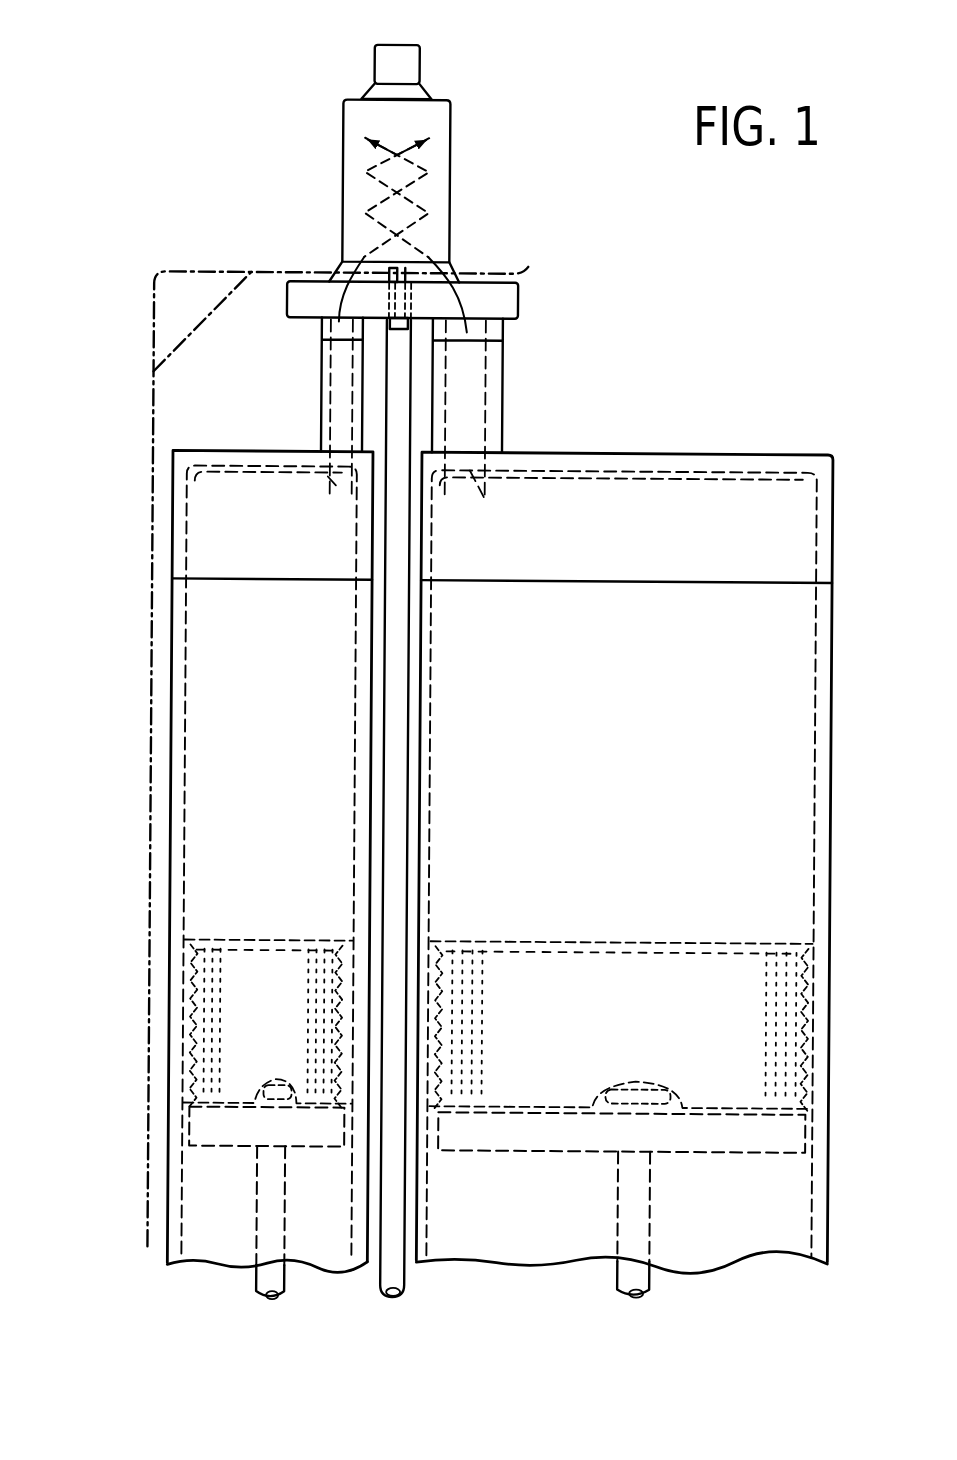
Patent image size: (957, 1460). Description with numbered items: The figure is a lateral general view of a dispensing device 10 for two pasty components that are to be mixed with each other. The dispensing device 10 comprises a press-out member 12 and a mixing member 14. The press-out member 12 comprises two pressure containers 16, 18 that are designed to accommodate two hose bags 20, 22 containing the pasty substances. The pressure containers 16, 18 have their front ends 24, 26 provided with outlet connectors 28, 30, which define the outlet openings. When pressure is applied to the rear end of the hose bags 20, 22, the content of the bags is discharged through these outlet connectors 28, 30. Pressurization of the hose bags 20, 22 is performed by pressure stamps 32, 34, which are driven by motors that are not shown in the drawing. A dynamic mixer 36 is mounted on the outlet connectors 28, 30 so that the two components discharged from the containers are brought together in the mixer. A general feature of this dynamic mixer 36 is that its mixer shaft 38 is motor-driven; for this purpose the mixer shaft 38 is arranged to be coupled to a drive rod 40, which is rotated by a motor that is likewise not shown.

The dispensing device 10 is at (82, 335).
The press-out member 12 is at (128, 985).
The mixing member 14 is at (522, 80).
The pressure container 16 is at (828, 766).
The pressure container 18 is at (178, 709).
The hose bag 20 is at (810, 682).
The hose bag 22 is at (347, 720).
The front end 24 is at (703, 457).
The front end 26 is at (220, 450).
The outlet connector 28 is at (480, 427).
The outlet connector 30 is at (330, 413).
The pressure stamp 32 is at (787, 1130).
The pressure stamp 34 is at (205, 1137).
The dynamic mixer 36 is at (465, 215).
The mixer shaft 38 is at (380, 185).
The drive rod 40 is at (403, 383).